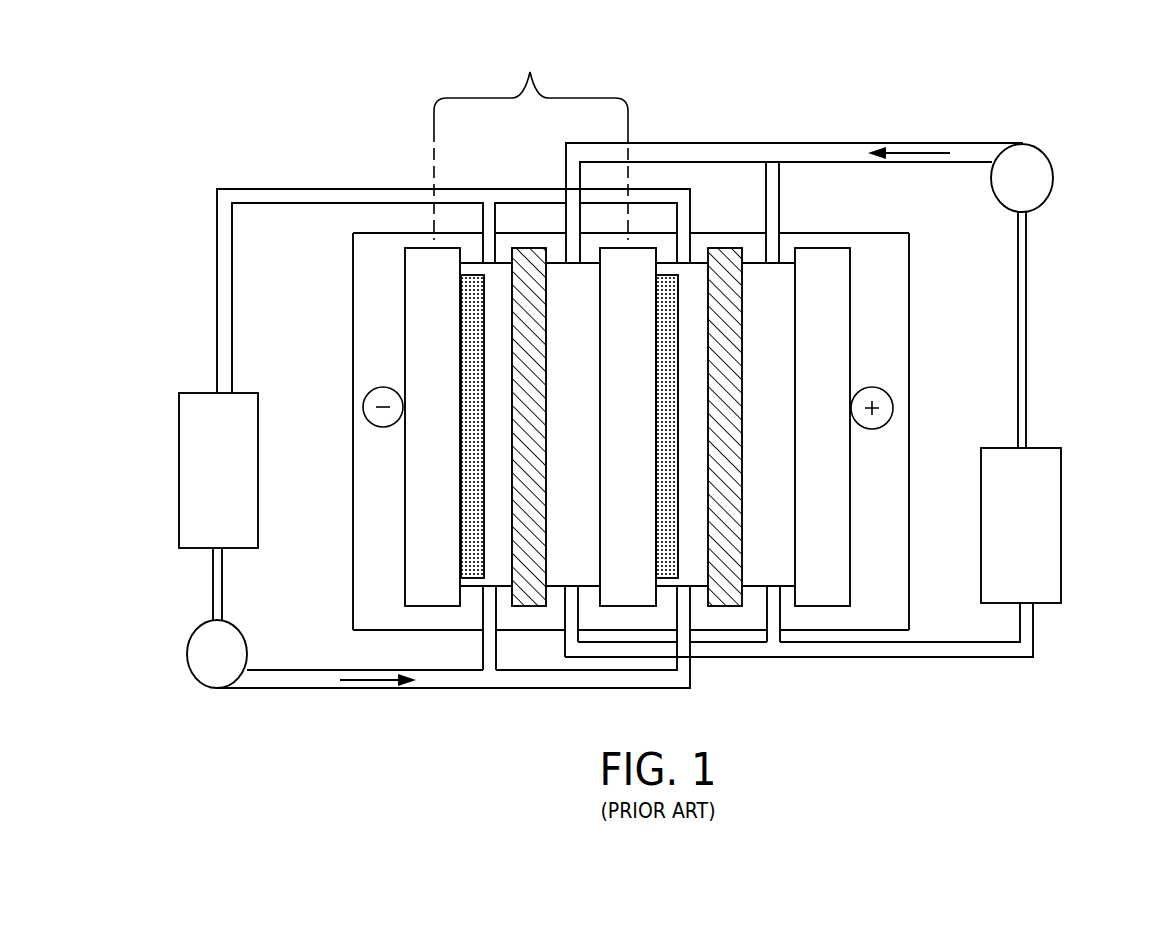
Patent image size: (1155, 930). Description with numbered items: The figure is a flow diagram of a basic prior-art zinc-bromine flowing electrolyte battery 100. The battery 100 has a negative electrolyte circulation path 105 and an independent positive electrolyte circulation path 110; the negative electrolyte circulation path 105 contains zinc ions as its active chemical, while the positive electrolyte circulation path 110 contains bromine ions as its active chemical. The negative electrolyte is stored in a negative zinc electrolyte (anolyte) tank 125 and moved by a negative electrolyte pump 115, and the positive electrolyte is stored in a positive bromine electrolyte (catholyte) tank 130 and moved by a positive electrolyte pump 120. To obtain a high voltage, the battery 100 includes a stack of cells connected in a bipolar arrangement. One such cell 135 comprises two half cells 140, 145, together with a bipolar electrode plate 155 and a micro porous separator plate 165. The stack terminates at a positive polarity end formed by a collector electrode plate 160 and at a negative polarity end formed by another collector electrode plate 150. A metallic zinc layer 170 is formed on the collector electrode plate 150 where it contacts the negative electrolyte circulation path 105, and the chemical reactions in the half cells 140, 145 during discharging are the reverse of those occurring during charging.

The zinc-bromine flowing electrolyte battery 100 is at (174, 95).
The negative electrolyte circulation path 105 is at (335, 197).
The positive electrolyte circulation path 110 is at (835, 150).
The negative electrolyte pump 115 is at (198, 648).
The positive electrolyte pump 120 is at (1033, 180).
The negative zinc electrolyte tank 125 is at (190, 408).
The positive bromine electrolyte tank 130 is at (1050, 492).
The cell 135 is at (530, 72).
The half cell 140 is at (465, 606).
The half cell 145 is at (586, 607).
The collector electrode plate 150 is at (428, 302).
The bipolar electrode plate 155 is at (638, 589).
The collector electrode plate 160 is at (877, 273).
The micro porous separator plate 165 is at (525, 590).
The metallic zinc layer 170 is at (470, 538).